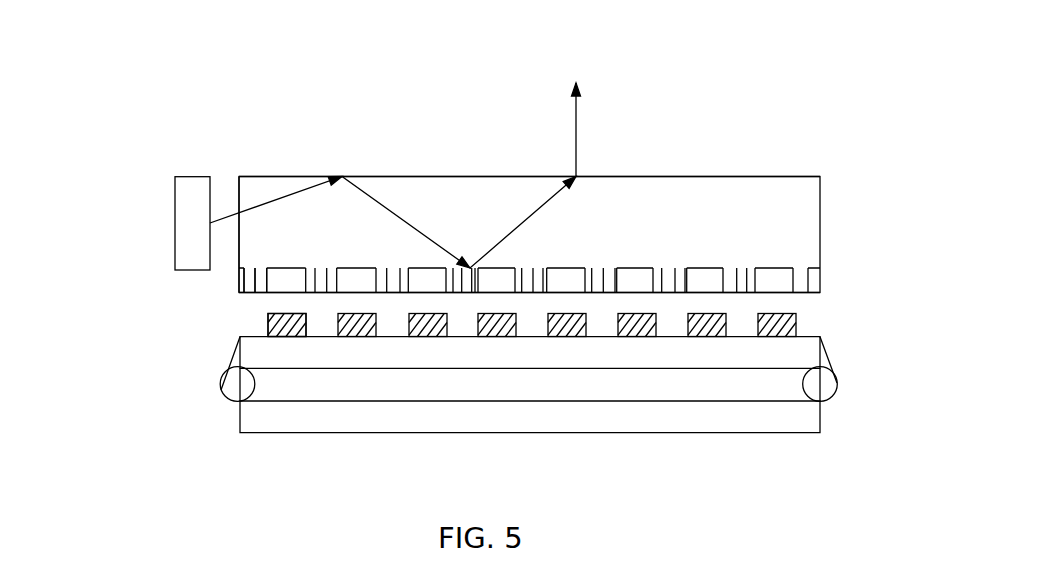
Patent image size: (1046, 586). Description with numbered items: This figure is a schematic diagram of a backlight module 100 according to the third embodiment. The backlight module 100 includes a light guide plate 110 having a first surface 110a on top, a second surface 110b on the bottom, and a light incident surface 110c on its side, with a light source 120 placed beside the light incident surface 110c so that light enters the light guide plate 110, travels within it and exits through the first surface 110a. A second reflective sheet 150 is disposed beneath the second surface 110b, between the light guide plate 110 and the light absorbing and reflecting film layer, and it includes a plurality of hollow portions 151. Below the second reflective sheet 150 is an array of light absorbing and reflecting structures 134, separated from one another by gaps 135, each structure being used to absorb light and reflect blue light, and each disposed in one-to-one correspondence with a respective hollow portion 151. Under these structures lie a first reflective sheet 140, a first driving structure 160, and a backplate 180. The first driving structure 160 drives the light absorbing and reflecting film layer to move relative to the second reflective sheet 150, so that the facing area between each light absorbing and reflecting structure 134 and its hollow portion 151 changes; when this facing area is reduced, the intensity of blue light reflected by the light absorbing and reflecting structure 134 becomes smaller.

The backlight module 100 is at (511, 32).
The light guide plate 110 is at (808, 213).
The first surface 110a is at (649, 177).
The second surface 110b is at (693, 268).
The light incident surface 110c is at (240, 192).
The light source 120 is at (190, 199).
The second reflective sheet 150 is at (813, 277).
The hollow portion 151 is at (285, 283).
The light absorbing and reflecting structure 134 is at (795, 327).
The gap 135 is at (310, 318).
The first reflective sheet 140 is at (795, 358).
The first driving structure 160 is at (812, 385).
The backplate 180 is at (812, 425).